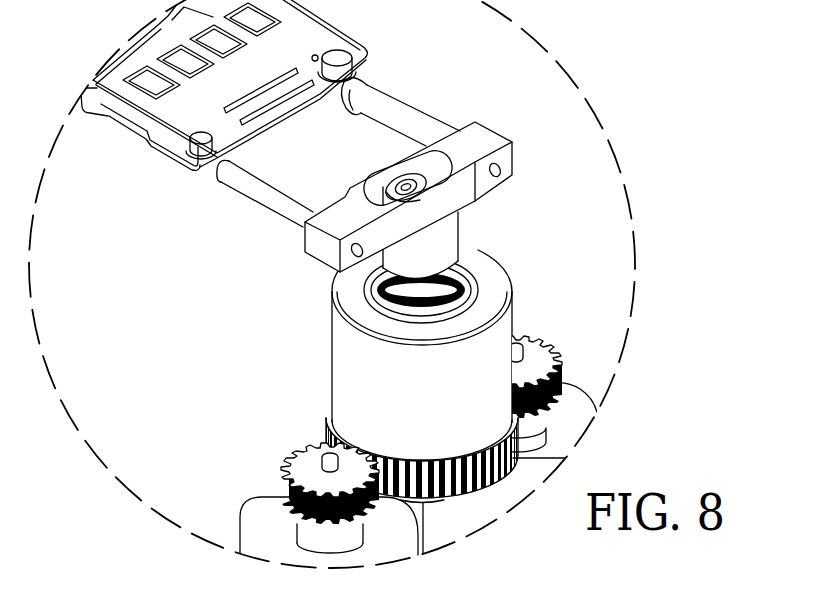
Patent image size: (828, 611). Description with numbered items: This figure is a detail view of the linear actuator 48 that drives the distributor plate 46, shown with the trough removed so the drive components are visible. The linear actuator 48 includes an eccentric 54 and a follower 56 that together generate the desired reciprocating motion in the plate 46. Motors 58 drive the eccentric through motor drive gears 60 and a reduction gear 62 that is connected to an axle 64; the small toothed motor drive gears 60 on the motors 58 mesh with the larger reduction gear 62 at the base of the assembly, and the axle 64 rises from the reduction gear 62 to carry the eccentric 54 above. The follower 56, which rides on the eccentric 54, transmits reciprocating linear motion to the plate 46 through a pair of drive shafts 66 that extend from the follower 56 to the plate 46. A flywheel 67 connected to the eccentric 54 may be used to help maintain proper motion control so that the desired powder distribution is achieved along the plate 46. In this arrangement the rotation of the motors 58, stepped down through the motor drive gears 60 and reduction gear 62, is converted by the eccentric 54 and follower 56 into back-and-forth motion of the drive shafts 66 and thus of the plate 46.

The plate 46 is at (351, 36).
The linear actuator 48 is at (178, 324).
The eccentric 54 is at (396, 183).
The follower 56 is at (460, 203).
The motor 58 is at (259, 520).
The motor drive gear 60 is at (307, 463).
The reduction gear 62 is at (477, 483).
The axle 64 is at (445, 252).
The drive shaft 66 is at (403, 117).
The flywheel 67 is at (343, 376).